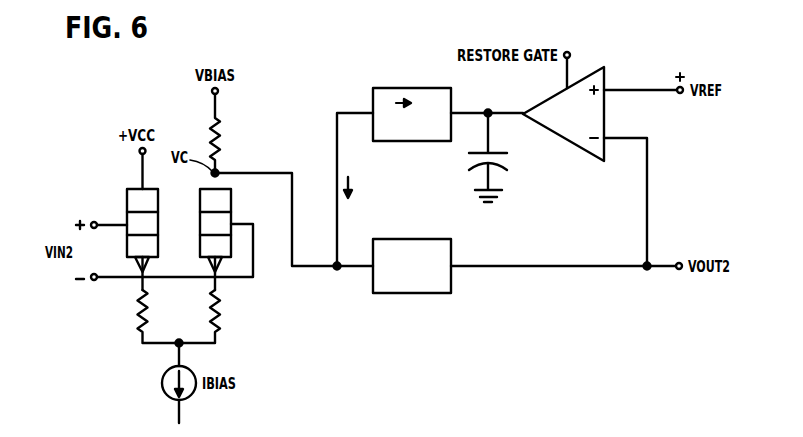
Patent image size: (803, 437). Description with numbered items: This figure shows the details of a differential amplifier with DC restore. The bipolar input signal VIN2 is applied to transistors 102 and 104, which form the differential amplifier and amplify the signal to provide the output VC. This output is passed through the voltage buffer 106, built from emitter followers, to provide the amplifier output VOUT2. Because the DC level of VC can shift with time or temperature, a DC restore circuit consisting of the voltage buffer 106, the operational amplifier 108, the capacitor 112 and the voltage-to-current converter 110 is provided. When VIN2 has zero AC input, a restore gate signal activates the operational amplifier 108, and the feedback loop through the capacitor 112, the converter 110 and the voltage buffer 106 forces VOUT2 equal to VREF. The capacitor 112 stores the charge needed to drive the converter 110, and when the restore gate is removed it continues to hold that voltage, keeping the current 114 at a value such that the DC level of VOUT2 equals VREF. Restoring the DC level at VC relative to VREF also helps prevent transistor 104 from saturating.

The transistor 102 is at (127, 195).
The transistor 104 is at (232, 198).
The voltage buffer 106 is at (422, 238).
The operational amplifier 108 is at (595, 68).
The voltage-to-current converter 110 is at (398, 88).
The capacitor 112 is at (507, 155).
The current 114 is at (349, 182).